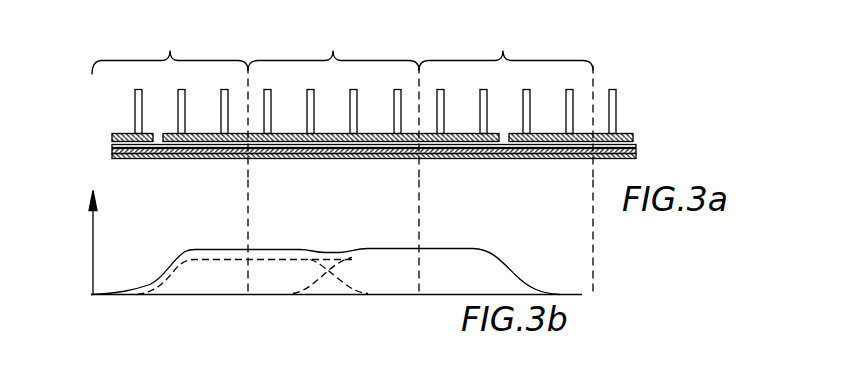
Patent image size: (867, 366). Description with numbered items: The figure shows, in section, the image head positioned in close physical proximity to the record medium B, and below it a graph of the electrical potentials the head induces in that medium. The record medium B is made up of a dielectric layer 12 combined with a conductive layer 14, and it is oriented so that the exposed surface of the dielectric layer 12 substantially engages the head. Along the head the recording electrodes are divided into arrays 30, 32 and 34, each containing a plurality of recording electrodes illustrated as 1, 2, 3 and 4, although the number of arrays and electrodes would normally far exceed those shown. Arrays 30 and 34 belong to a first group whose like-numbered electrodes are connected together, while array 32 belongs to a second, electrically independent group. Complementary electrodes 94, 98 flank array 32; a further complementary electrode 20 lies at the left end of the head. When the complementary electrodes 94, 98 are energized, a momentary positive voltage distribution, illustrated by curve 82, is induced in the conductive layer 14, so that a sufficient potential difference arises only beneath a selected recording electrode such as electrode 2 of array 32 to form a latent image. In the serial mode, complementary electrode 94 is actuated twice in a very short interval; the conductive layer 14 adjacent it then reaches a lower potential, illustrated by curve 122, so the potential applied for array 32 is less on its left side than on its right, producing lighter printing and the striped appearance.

In FIG. 3A, the array 30 is at (170, 52).
In FIG. 3A, the array 32 is at (333, 50).
In FIG. 3A, the array 34 is at (506, 50).
In FIG. 3A, the recording electrode 1 is at (447, 107).
In FIG. 3A, the recording electrode 2 is at (317, 107).
In FIG. 3A, the recording electrode 3 is at (360, 107).
In FIG. 3A, the recording electrode 4 is at (403, 107).
In FIG. 3A, the electrode segment 20 is at (118, 136).
In FIG. 3A, the complementary electrode 94 is at (205, 136).
In FIG. 3A, the complementary electrode 98 is at (367, 136).
In FIG. 3A, the dielectric layer 12 is at (635, 148).
In FIG. 3A, the conductive layer 14 is at (636, 158).
In FIG. 3A, the record medium B is at (112, 153).
In FIG. 3B, the curve 82 is at (233, 251).
In FIG. 3B, the curve 122 is at (238, 264).